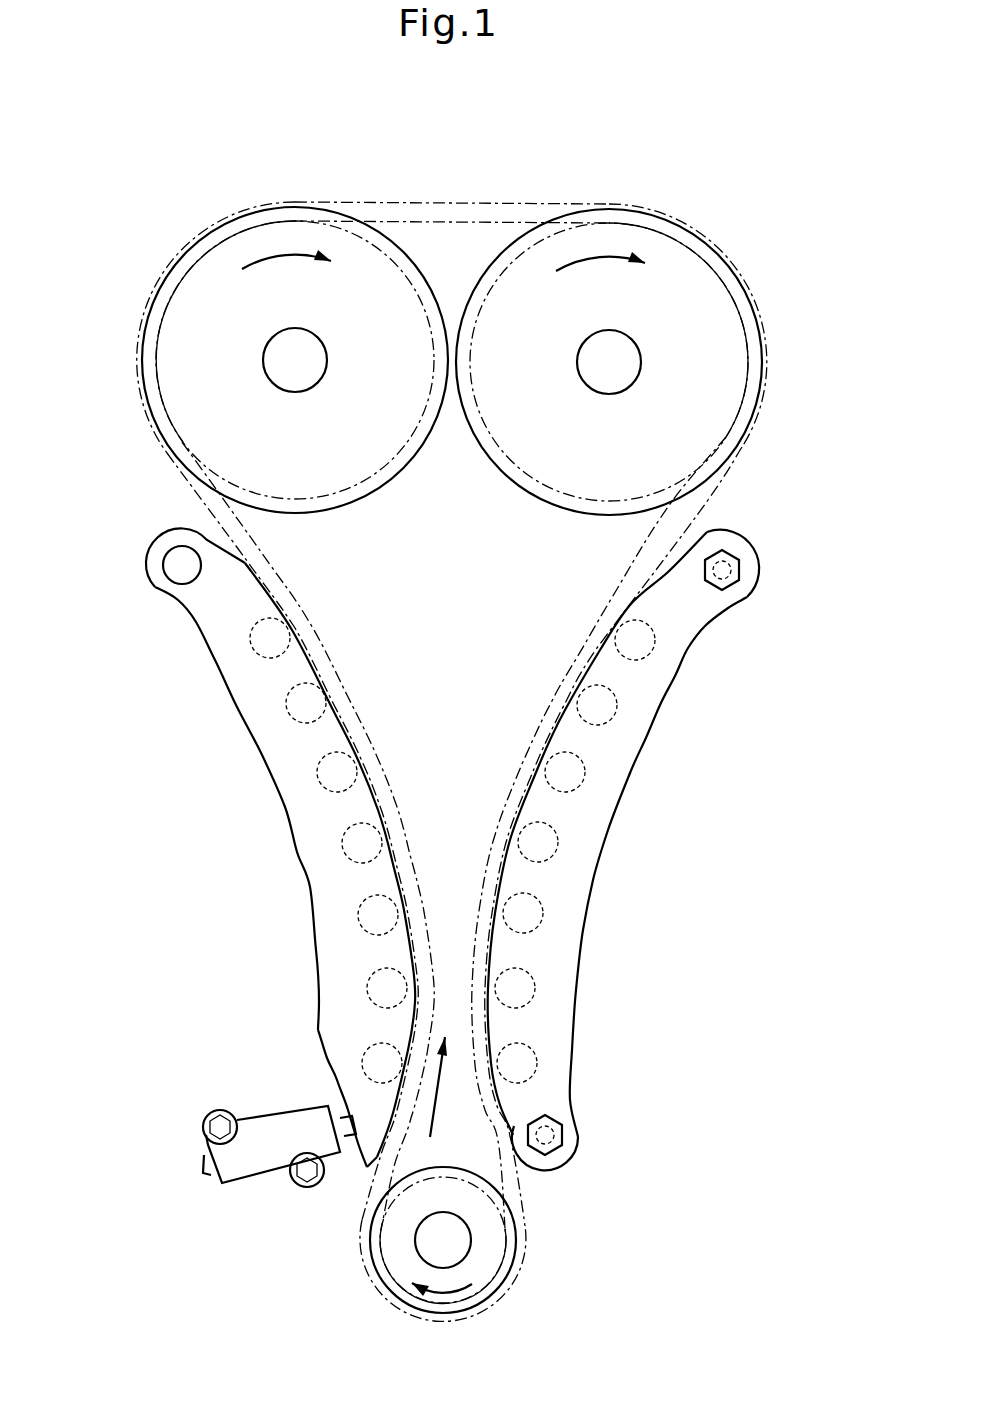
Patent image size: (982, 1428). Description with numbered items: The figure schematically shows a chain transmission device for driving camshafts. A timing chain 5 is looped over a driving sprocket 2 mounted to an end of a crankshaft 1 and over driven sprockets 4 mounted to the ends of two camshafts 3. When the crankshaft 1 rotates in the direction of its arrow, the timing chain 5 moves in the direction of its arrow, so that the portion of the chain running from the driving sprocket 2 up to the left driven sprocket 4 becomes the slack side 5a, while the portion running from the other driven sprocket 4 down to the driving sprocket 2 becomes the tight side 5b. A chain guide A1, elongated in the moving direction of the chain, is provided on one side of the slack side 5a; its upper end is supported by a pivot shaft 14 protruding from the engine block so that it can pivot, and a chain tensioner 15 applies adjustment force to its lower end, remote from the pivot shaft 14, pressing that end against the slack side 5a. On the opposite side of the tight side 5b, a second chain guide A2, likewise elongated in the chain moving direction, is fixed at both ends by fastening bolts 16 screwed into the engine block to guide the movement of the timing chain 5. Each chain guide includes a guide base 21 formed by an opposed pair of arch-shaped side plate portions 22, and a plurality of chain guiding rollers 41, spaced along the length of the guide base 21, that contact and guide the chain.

The crankshaft 1 is at (432, 1247).
The driving sprocket 2 is at (395, 1223).
The camshaft 3 is at (294, 362).
The driven sprocket 4 is at (343, 243).
The timing chain 5 is at (446, 202).
The slack side 5a is at (308, 622).
The tight side 5b is at (577, 657).
The pivot shaft 14 is at (180, 565).
The chain tensioner 15 is at (286, 1112).
The fastening bolt 16 is at (733, 570).
The guide base 21 is at (208, 640).
The side plate portion 22 is at (295, 792).
The chain guiding roller 41 is at (283, 718).
The chain guide A1 is at (216, 830).
The chain guide A2 is at (676, 850).